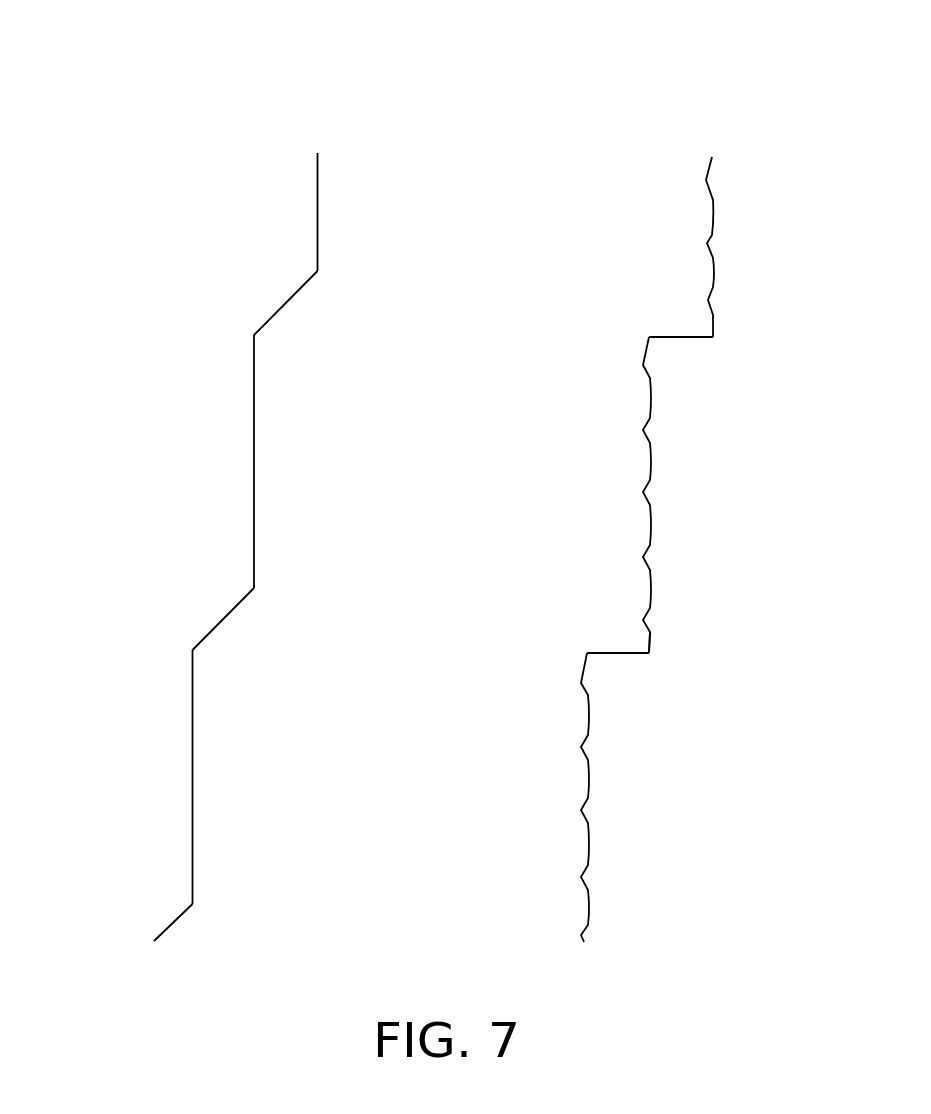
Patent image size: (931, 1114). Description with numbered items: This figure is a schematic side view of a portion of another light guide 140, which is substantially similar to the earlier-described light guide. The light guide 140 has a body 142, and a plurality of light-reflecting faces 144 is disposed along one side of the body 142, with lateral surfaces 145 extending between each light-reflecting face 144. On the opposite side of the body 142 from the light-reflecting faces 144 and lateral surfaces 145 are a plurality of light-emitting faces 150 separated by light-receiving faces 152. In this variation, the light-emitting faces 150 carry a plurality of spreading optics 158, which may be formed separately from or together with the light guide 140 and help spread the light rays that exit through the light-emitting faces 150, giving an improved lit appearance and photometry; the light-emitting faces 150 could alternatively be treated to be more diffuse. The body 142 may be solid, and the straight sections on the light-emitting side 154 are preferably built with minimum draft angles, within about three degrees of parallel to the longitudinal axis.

The light guide 140 is at (203, 85).
The body 142 is at (457, 222).
The light-reflecting faces 144 is at (280, 308).
The lateral surfaces 145 is at (318, 205).
The light-emitting faces 150 is at (712, 541).
The light-receiving faces 152 is at (702, 338).
The light-emitting side 154 is at (661, 638).
The spreading optics 158 is at (714, 205).